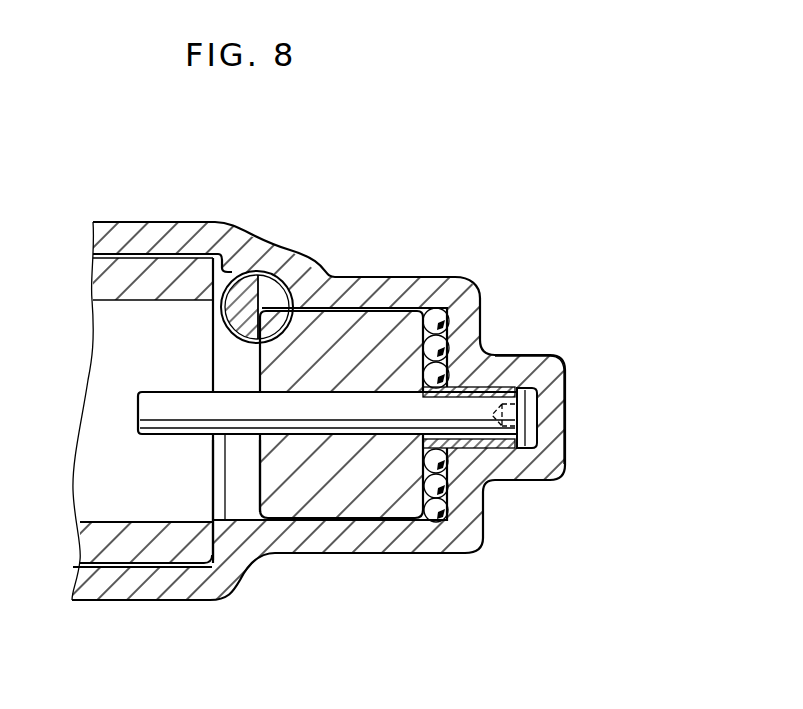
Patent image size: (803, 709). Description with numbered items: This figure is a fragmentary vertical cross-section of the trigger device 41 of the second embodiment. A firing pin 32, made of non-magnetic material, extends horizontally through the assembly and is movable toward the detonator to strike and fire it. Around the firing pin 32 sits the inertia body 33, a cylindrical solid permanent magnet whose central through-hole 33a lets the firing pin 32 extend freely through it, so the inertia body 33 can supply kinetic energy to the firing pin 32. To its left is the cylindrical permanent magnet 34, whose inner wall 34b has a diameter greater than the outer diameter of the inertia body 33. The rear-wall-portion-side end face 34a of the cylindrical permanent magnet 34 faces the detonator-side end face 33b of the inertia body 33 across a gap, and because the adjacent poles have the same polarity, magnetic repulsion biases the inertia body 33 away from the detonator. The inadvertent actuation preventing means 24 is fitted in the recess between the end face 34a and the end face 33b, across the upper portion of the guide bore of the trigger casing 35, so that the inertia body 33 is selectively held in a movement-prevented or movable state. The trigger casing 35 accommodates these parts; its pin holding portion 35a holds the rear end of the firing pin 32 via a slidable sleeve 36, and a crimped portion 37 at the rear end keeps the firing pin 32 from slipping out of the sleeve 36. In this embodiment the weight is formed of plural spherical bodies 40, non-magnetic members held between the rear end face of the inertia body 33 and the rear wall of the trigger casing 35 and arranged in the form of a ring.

The trigger device 41 is at (244, 213).
The cylindrical permanent magnet 34 is at (100, 274).
The rear-wall-portion-side end face of the cylindrical permanent magnet 34a is at (214, 482).
The inner wall of the cylindrical permanent magnet 34b is at (147, 521).
The firing pin 32 is at (177, 382).
The inadvertent actuation preventing means 24 is at (280, 286).
The inertia body 33 is at (371, 328).
The through-hole 33a is at (320, 435).
The detonator-side end face of the inertia body 33b is at (257, 463).
The trigger casing 35 is at (441, 284).
The pin holding portion 35a is at (543, 372).
The sleeve 36 is at (493, 387).
The crimped portion 37 is at (527, 415).
The spherical bodies 40 is at (448, 497).